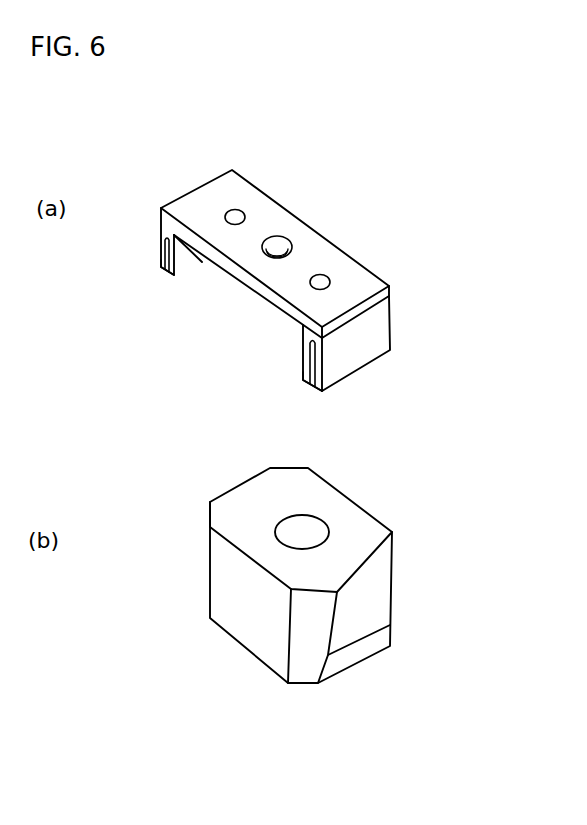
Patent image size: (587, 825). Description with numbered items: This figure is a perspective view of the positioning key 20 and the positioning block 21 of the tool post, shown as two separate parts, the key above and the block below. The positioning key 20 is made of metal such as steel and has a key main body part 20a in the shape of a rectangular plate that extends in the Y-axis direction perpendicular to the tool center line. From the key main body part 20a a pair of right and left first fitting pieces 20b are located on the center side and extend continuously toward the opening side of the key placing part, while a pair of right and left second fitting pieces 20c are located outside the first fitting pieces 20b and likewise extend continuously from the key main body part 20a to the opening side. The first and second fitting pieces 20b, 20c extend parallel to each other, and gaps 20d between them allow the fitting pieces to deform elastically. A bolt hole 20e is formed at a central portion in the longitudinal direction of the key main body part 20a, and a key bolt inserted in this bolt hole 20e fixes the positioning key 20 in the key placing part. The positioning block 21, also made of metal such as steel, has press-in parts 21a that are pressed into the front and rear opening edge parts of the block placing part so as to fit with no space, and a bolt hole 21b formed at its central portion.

The positioning key 20 is at (374, 272).
The key main body part 20a is at (262, 191).
The first fitting piece 20b is at (178, 273).
The second fitting piece 20c is at (160, 258).
The gap 20d is at (165, 271).
The bolt hole 20e is at (275, 242).
The positioning block 21 is at (387, 527).
The press-in part 21a is at (378, 585).
The bolt hole 21b is at (234, 503).